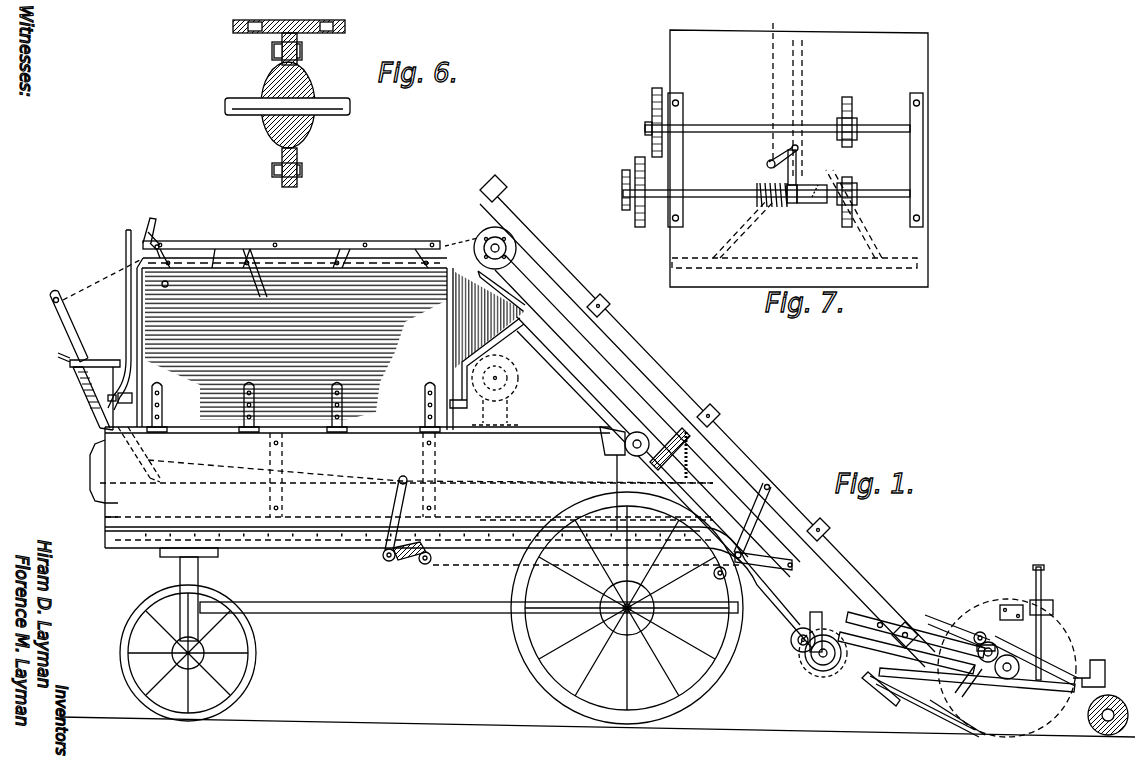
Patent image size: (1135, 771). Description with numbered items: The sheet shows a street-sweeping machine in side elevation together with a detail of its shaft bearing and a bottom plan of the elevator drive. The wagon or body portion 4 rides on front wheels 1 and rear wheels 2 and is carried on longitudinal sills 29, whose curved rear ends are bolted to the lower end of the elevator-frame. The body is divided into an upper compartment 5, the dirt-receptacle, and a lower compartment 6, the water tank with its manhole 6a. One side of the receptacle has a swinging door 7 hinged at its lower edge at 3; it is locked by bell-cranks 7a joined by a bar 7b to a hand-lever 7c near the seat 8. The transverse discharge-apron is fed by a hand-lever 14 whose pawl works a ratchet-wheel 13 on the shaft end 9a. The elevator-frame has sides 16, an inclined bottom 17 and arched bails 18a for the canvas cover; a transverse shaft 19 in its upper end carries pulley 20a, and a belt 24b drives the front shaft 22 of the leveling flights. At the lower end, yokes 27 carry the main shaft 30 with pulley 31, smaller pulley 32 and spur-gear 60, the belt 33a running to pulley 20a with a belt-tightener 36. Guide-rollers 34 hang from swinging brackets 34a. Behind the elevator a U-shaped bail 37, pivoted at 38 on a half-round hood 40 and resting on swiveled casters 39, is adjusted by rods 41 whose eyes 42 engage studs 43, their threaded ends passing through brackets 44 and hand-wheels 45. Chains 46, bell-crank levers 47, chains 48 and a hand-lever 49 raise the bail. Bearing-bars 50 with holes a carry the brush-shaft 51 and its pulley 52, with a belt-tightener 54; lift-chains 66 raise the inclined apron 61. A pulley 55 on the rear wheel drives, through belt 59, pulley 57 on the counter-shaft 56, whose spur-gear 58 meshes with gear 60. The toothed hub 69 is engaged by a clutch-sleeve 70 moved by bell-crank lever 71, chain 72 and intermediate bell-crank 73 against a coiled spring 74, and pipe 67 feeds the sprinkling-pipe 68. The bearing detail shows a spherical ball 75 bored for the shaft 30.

In FIG. 1, the front wheels 1 is at (256, 651).
In FIG. 1, the rear wheels 2 is at (627, 608).
In FIG. 1, the hinge 3 is at (164, 425).
In FIG. 1, the wagon or body portion 4 is at (110, 515).
In FIG. 1, the upper compartment 5 is at (415, 254).
In FIG. 1, the lower compartment 6 is at (409, 487).
In FIG. 1, the manhole 6a is at (100, 486).
In FIG. 1, the swinging door 7 is at (295, 349).
In FIG. 1, the bell-cranks 7a is at (268, 298).
In FIG. 1, the bar 7b is at (328, 247).
In FIG. 1, the hand-lever 7c is at (156, 230).
In FIG. 1, the seat 8 is at (130, 256).
In FIG. 1, the front end of end shaft 9a is at (134, 396).
In FIG. 1, the ratchet-wheel 13 is at (100, 427).
In FIG. 1, the hand-lever 14 is at (125, 237).
In FIG. 1, the elevator-frame sides 16 is at (707, 421).
In FIG. 7, the elevator bottom 17 is at (907, 73).
In FIG. 1, the elevator bottom 17 is at (590, 387).
In FIG. 1, the arched bails 18a is at (722, 414).
In FIG. 1, the transverse shaft 19 is at (503, 243).
In FIG. 1, the fixed pulley 20a is at (485, 279).
In FIG. 1, the transverse shaft 22 is at (165, 290).
In FIG. 1, the belt 24b is at (288, 241).
In FIG. 7, the yokes 27 is at (684, 162).
In FIG. 1, the yokes 27 is at (818, 618).
In FIG. 1, the longitudinal sills 29 is at (300, 544).
In FIG. 6, the main shaft 30 is at (322, 117).
In FIG. 7, the main shaft 30 is at (708, 197).
In FIG. 1, the main shaft 30 is at (818, 670).
In FIG. 7, the pulley 31 is at (641, 205).
In FIG. 1, the pulley 31 is at (808, 660).
In FIG. 7, the smaller pulley 32 is at (608, 189).
In FIG. 1, the smaller pulley 32 is at (832, 670).
In FIG. 1, the belt 33a is at (627, 377).
In FIG. 1, the guide-rollers 34 is at (930, 710).
In FIG. 1, the swinging brackets 34a is at (920, 614).
In FIG. 1, the belt-tightener 36 is at (625, 447).
In FIG. 1, the U-shaped bail or frame 37 is at (975, 632).
In FIG. 1, the pivot 38 is at (985, 640).
In FIG. 1, the swiveled casters 39 is at (1092, 716).
In FIG. 1, the half-round hood 40 is at (1065, 640).
In FIG. 1, the rods 41 is at (1043, 571).
In FIG. 1, the eyes 42 is at (1036, 683).
In FIG. 1, the studs 43 is at (1035, 647).
In FIG. 1, the brackets 44 is at (1010, 605).
In FIG. 1, the hand-wheels or nuts 45 is at (1054, 608).
In FIG. 1, the short chains 46 is at (796, 568).
In FIG. 1, the bell-crank levers 47 is at (752, 520).
In FIG. 1, the chains 48 is at (515, 486).
In FIG. 1, the hand-lever 49 is at (72, 338).
In FIG. 1, the bearing-bars 50 is at (860, 645).
In FIG. 1, the brush-shaft 51 is at (1008, 680).
In FIG. 1, the pulley 52 is at (980, 632).
In FIG. 1, the belt-tightener 54 is at (977, 648).
In FIG. 1, the pulley 55 is at (612, 616).
In FIG. 7, the counter-shaft 56 is at (722, 125).
In FIG. 1, the counter-shaft 56 is at (790, 640).
In FIG. 7, the pulley 57 is at (652, 115).
In FIG. 1, the pulley 57 is at (795, 652).
In FIG. 7, the spur-gear 58 is at (853, 104).
In FIG. 1, the belt 59 is at (698, 643).
In FIG. 7, the spur-gear 60 is at (853, 220).
In FIG. 1, the inclined apron or pan 61 is at (964, 730).
In FIG. 1, the lift-chains 66 is at (960, 684).
In FIG. 7, the water-discharge pipe 67 is at (793, 70).
In FIG. 7, the sprinkling-pipe 68 is at (780, 263).
In FIG. 7, the toothed hub 69 is at (797, 163).
In FIG. 7, the clutch-sleeve 70 is at (816, 204).
In FIG. 7, the bell-crank lever 71 is at (768, 164).
In FIG. 7, the chain or cable 72 is at (773, 78).
In FIG. 1, the intermediate bell-crank 73 is at (411, 560).
In FIG. 7, the coiled spring 74 is at (767, 208).
In FIG. 6, the spherical balls 75 is at (262, 124).
In FIG. 1, the holes a is at (884, 692).